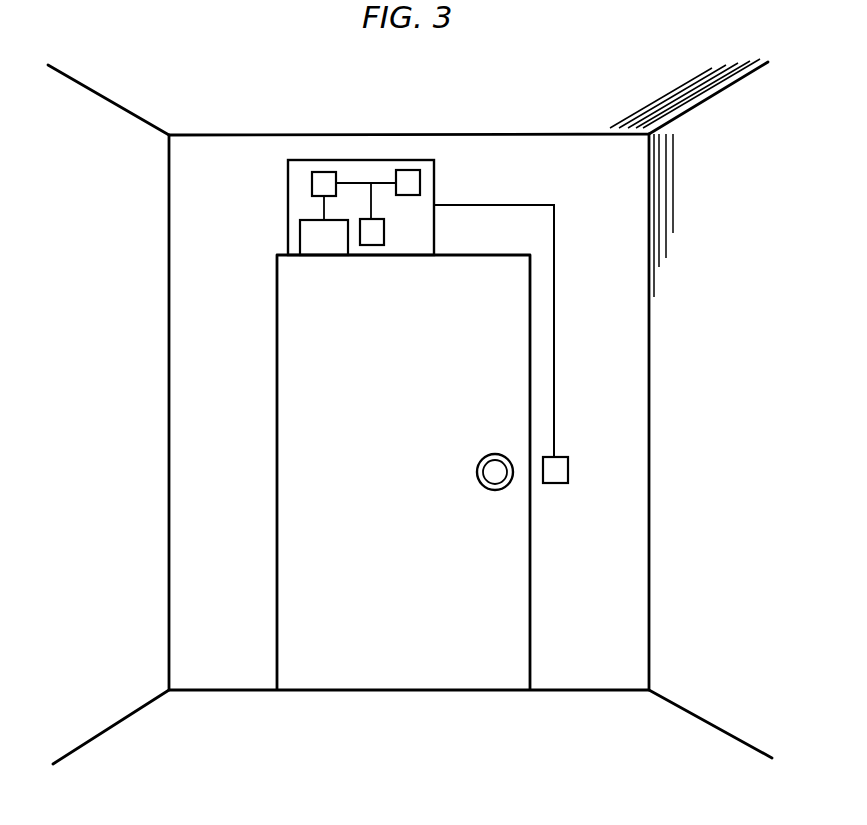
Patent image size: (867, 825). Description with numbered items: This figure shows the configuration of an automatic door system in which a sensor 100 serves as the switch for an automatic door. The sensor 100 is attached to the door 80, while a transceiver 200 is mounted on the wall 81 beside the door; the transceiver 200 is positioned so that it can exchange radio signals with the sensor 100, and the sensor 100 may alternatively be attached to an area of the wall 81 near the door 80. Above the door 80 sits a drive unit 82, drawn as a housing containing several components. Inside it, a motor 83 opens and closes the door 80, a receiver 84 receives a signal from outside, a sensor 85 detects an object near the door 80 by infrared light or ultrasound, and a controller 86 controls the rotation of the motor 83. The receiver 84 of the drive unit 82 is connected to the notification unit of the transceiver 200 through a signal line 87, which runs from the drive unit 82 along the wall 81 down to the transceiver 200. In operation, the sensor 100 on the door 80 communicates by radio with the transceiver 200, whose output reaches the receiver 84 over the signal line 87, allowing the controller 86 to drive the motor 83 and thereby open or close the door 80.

The door 80 is at (522, 562).
The wall 81 is at (556, 134).
The drive unit 82 is at (287, 165).
The motor 83 is at (300, 233).
The receiver 84 is at (411, 176).
The sensor 85 is at (385, 235).
The controller 86 is at (311, 178).
The signal line 87 is at (555, 263).
The sensor 100 is at (491, 454).
The transceiver 200 is at (597, 443).